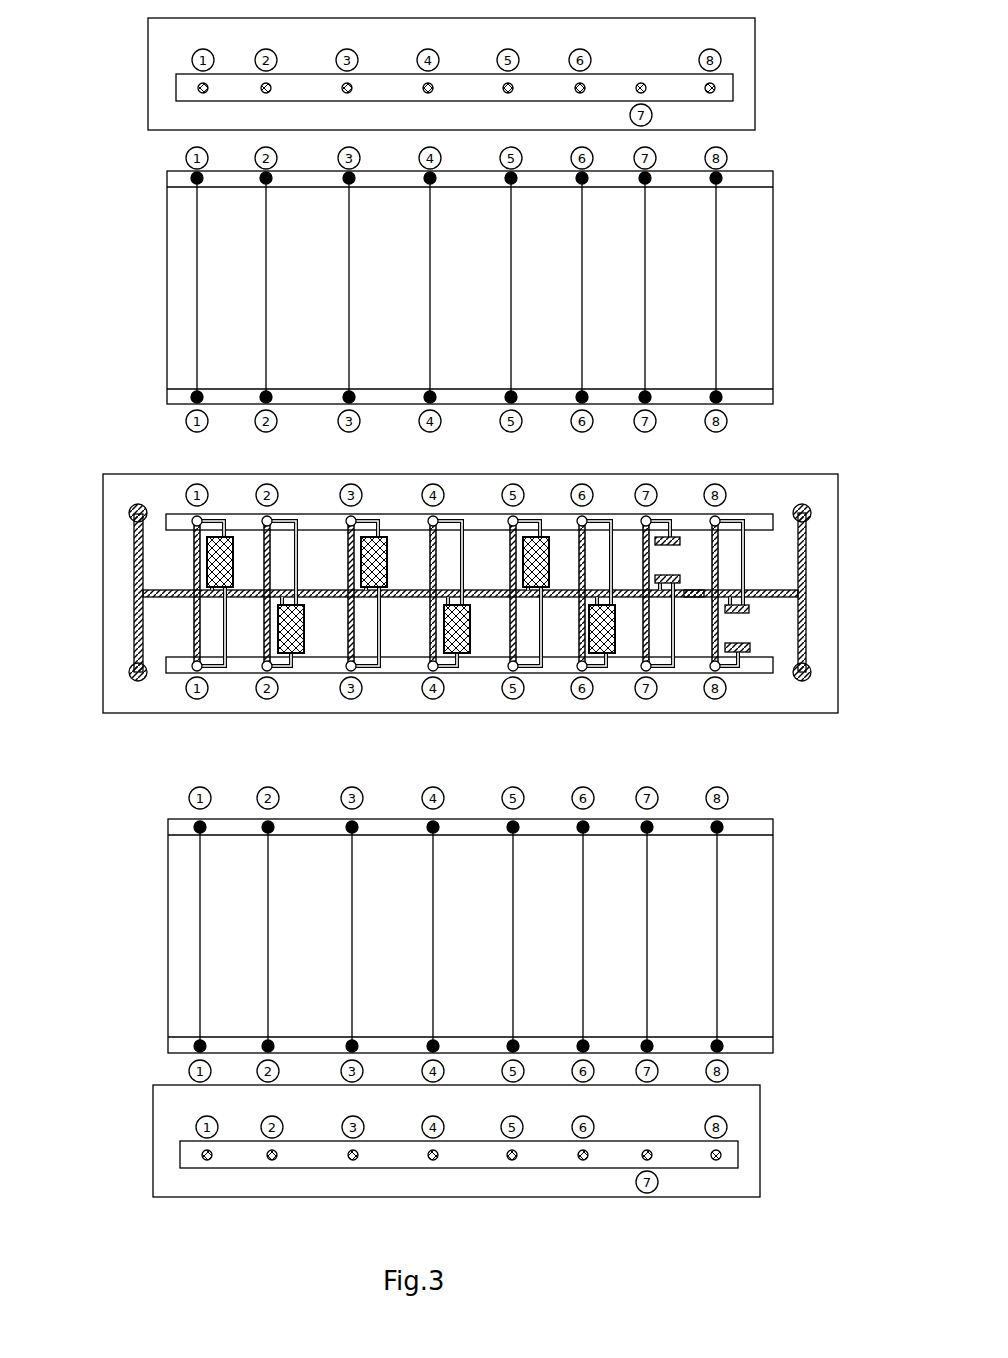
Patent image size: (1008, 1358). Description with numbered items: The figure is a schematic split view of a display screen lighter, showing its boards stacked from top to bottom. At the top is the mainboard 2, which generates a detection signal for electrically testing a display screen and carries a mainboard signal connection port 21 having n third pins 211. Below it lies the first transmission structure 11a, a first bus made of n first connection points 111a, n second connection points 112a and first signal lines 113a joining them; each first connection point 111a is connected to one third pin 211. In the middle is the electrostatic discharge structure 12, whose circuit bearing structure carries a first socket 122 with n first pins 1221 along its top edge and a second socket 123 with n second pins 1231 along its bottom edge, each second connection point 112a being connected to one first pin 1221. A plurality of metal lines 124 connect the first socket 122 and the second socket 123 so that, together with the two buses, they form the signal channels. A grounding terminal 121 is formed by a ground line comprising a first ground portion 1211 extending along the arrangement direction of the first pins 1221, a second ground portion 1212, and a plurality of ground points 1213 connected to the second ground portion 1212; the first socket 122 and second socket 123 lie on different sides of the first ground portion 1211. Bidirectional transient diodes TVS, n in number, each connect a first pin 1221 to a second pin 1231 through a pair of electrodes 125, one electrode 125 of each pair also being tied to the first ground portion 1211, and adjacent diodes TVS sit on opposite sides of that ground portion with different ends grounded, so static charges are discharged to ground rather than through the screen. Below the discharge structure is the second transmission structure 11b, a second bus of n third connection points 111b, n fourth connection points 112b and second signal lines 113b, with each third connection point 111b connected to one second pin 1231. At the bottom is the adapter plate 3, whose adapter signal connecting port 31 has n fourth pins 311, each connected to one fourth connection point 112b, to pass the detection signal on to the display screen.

The mainboard 2 is at (740, 46).
The mainboard signal connection port 21 is at (726, 88).
The third pin 211 is at (641, 82).
The first transmission structure 11a is at (183, 220).
The first connection point 111a is at (196, 178).
The second connection point 112a is at (196, 397).
The first signal line 113a is at (197, 310).
The electrostatic discharge structure 12 is at (788, 495).
The first socket 122 is at (316, 516).
The second socket 123 is at (393, 667).
The metal line 124 is at (197, 613).
The first pin 1221 is at (131, 520).
The second pin 1231 is at (130, 666).
The bidirectional transient diode TVS is at (207, 568).
The electrode 125 is at (750, 609).
The grounding terminal 121 is at (787, 654).
The first ground portion 1211 is at (694, 597).
The second ground portion 1212 is at (808, 635).
The ground point 1213 is at (800, 635).
The second transmission structure 11b is at (183, 869).
The third connection point 111b is at (198, 827).
The fourth connection point 112b is at (198, 1046).
The second signal line 113b is at (200, 958).
The adapter plate 3 is at (745, 1113).
The adapter signal connecting port 31 is at (730, 1155).
The fourth pin 311 is at (647, 1150).